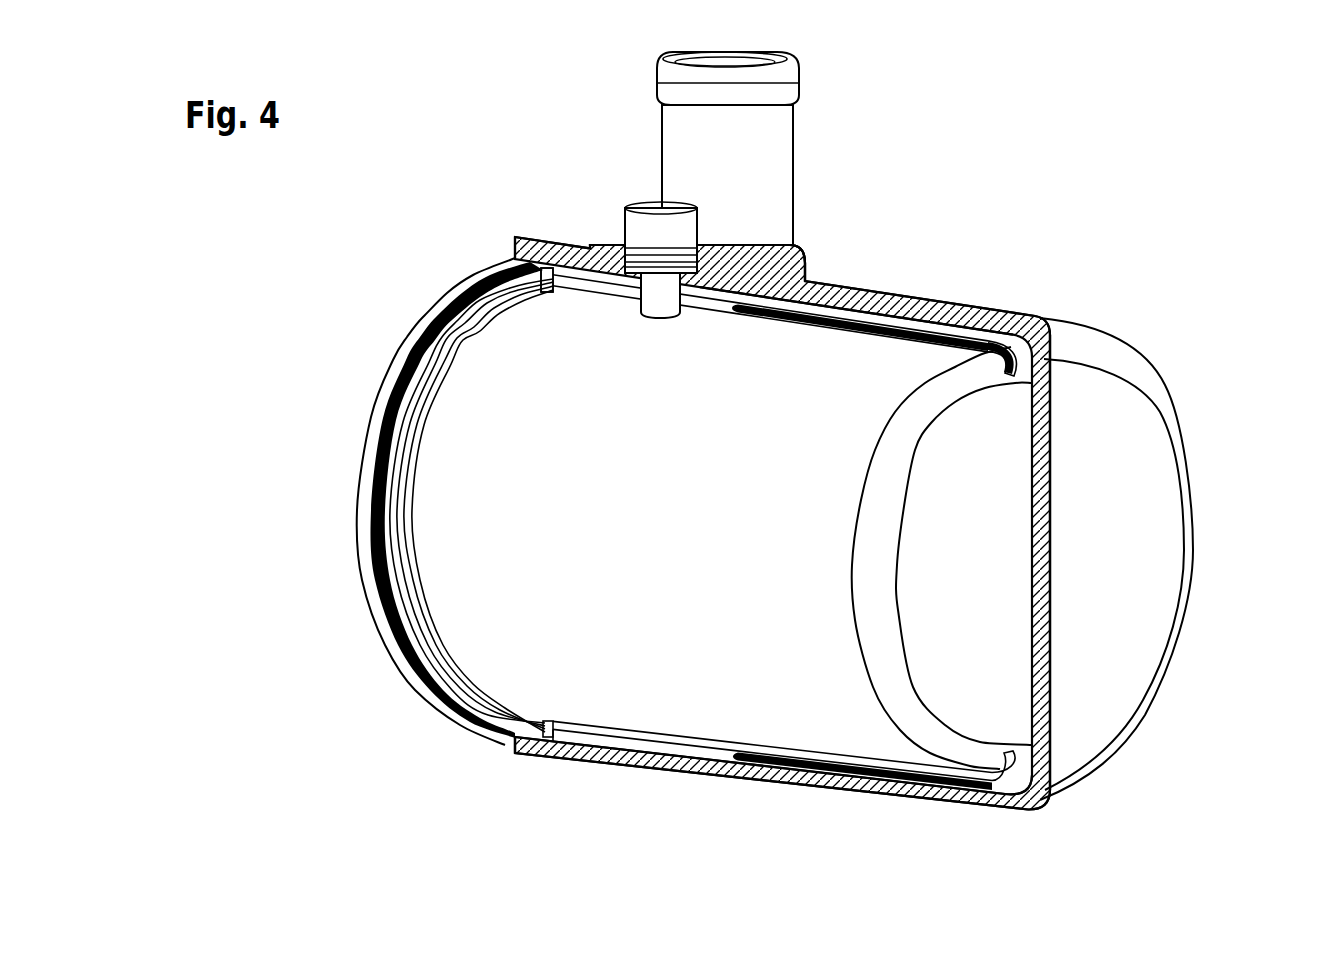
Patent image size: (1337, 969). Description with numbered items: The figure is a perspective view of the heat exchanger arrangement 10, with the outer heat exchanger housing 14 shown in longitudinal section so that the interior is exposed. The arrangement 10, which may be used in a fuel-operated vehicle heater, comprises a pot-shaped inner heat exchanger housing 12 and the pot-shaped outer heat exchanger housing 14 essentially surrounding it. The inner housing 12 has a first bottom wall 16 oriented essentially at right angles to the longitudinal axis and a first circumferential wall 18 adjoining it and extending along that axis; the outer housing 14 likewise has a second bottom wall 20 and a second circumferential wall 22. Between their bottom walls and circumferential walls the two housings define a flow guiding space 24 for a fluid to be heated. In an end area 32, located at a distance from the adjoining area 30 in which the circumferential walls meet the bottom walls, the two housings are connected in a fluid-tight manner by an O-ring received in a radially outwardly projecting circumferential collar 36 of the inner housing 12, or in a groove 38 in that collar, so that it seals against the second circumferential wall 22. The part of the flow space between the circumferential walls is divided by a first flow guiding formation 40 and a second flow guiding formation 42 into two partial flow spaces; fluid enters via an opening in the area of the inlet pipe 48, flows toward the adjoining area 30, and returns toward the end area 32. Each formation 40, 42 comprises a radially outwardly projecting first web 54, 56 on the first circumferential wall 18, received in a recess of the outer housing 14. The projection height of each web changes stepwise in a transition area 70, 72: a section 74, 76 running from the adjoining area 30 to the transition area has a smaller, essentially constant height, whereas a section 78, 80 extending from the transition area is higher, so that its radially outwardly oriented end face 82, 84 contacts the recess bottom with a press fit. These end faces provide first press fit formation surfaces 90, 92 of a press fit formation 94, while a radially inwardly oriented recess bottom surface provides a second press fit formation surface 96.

The heat exchanger arrangement 10 is at (1214, 157).
The inner heat exchanger housing 12 is at (372, 421).
The outer heat exchanger housing 14 is at (1158, 391).
The first bottom wall 16 is at (1020, 656).
The first circumferential wall 18 is at (540, 600).
The second bottom wall 20 is at (1147, 545).
The second circumferential wall 22 is at (982, 308).
The flow guiding space 24 is at (1030, 770).
The adjoining area 30 is at (1115, 307).
The end area 32 is at (507, 216).
The circumferential collar 36 is at (372, 622).
The groove 38 is at (374, 553).
The first flow guiding formation 40 is at (847, 288).
The second flow guiding formation 42 is at (712, 777).
The inlet pipe 48 is at (793, 152).
The first web 54 is at (903, 299).
The first web 56 is at (822, 790).
The transition area 70 is at (732, 316).
The transition area 72 is at (737, 724).
The section 74 is at (882, 342).
The section 76 is at (846, 755).
The section 78 is at (597, 283).
The section 80 is at (600, 733).
The end face 82 is at (588, 238).
The end face 84 is at (562, 760).
The first press fit formation surface 90 is at (718, 298).
The first press fit formation surface 92 is at (632, 770).
The press fit formation 94 is at (568, 724).
The second press fit formation surface 96 is at (555, 293).